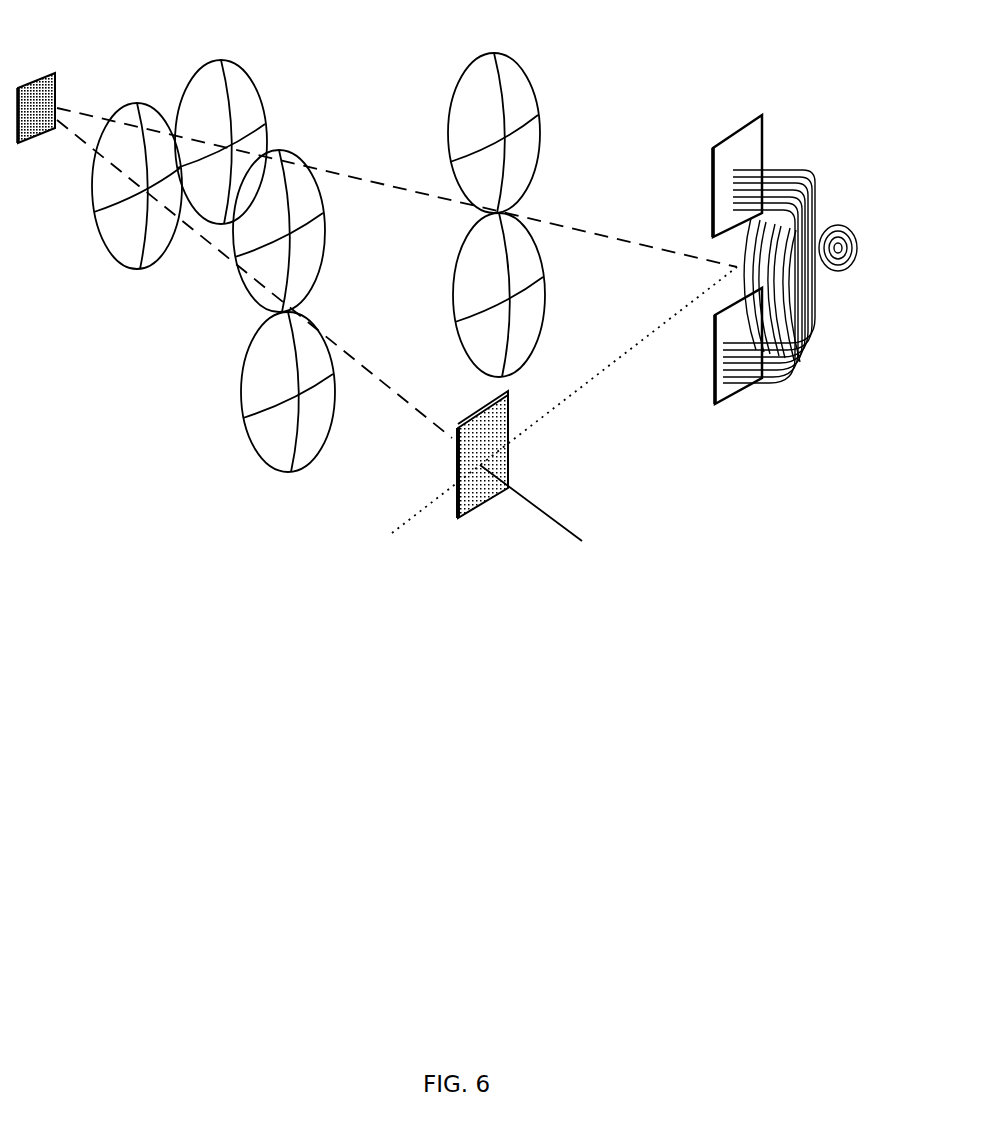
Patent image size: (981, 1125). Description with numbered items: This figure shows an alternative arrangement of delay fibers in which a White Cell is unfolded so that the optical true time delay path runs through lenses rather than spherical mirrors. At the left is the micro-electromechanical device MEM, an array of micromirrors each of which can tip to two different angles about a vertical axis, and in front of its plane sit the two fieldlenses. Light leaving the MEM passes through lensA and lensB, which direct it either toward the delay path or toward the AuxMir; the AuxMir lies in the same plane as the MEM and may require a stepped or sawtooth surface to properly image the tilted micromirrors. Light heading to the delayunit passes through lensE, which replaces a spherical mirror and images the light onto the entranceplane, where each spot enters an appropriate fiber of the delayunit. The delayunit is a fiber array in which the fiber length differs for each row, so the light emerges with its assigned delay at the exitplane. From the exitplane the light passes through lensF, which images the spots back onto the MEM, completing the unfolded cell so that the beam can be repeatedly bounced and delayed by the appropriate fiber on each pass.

The micro-electromechanical (MEM) device MEM is at (41, 118).
The field lenses fieldlenses is at (179, 137).
The lens A lensA is at (325, 231).
The lens B lensB is at (331, 392).
The lens E lensE is at (462, 133).
The lens F lensF is at (471, 295).
The auxiliary mirror AuxMir is at (475, 487).
The delay entrance plane entranceplane is at (699, 162).
The delay exit plane exitplane is at (711, 363).
The delay unit delayunit is at (798, 278).